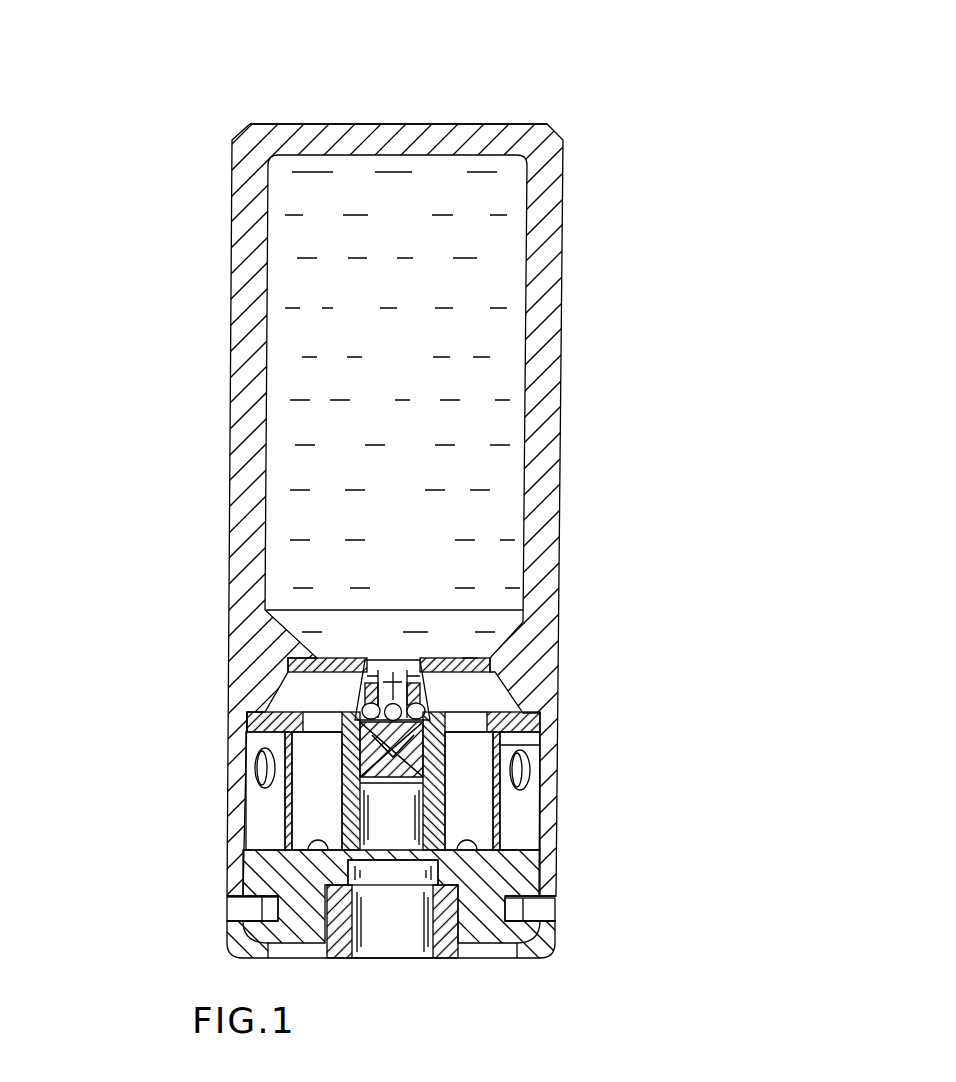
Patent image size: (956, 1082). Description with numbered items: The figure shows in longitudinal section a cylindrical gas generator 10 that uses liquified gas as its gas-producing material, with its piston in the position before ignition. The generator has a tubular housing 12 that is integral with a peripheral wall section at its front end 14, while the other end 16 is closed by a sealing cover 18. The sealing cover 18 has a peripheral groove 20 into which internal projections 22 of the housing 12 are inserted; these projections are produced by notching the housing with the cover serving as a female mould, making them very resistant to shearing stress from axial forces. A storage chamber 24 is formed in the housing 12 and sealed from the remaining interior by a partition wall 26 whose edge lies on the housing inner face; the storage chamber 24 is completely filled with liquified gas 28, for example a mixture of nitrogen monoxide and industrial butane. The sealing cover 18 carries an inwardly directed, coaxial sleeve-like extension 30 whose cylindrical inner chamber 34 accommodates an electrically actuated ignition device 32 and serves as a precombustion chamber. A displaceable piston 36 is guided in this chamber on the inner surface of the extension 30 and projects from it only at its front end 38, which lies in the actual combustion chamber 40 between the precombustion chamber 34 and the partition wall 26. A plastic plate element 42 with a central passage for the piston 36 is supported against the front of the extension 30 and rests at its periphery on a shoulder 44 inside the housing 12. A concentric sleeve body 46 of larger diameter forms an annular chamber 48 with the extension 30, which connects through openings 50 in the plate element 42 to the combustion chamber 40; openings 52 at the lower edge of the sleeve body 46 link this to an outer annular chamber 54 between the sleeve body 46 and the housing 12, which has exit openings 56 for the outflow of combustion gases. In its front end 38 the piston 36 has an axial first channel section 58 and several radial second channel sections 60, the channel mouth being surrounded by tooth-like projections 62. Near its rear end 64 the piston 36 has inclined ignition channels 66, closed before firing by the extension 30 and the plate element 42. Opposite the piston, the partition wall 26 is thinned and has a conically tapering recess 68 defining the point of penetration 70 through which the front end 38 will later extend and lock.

The gas generator 10 is at (100, 783).
The tubular housing 12 is at (558, 425).
The front end 14 is at (496, 86).
The other end 16 is at (508, 981).
The sealing cover 18 is at (520, 877).
The peripheral groove 20 is at (545, 953).
The internal projections 22 is at (555, 912).
The storage chamber 24 is at (507, 270).
The partition wall 26 is at (480, 668).
The liquified gas 28 is at (383, 355).
The sleeve-like extension 30 is at (440, 780).
The ignition device 32 is at (393, 847).
The cylindrical inner chamber 34 is at (500, 744).
The piston 36 is at (470, 659).
The front end of piston 38 is at (320, 718).
The combustion chamber 40 is at (497, 698).
The plate element 42 is at (258, 731).
The peripheral shoulder 44 is at (263, 710).
The sleeve body 46 is at (305, 786).
The annular chamber 48 is at (303, 767).
The openings 50 is at (337, 694).
The openings 52 is at (467, 840).
The annular chamber 54 is at (505, 841).
The exit openings 56 is at (522, 765).
The first channel section 58 is at (410, 668).
The second channel sections 60 is at (366, 700).
The tooth-like projections 62 is at (394, 702).
The rear end of piston 64 is at (395, 800).
The ignition channels 66 is at (355, 783).
The conically tapering recess 68 is at (374, 690).
The point of penetration 70 is at (378, 633).